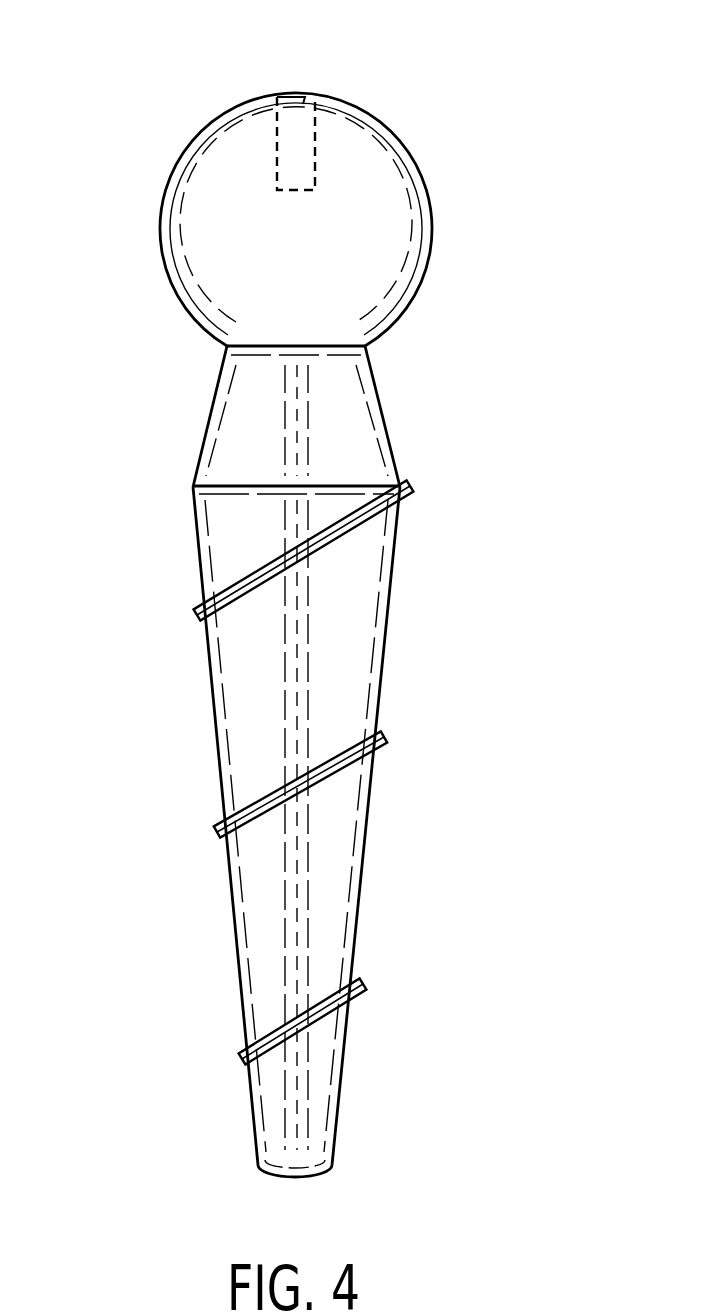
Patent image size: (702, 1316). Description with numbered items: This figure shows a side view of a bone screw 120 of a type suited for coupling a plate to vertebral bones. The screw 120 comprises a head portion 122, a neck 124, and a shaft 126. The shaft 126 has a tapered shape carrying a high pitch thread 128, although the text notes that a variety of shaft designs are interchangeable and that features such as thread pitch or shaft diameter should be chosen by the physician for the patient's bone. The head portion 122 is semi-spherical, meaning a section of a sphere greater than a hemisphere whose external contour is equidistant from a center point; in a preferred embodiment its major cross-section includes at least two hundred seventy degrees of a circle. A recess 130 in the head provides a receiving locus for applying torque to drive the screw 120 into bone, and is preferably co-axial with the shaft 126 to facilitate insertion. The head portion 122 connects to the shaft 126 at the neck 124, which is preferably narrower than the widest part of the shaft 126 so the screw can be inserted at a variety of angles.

The screw 120 is at (447, 176).
The head portion 122 is at (333, 265).
The neck 124 is at (383, 410).
The shaft 126 is at (380, 715).
The high pitch thread 128 is at (197, 616).
The recess 130 is at (307, 92).